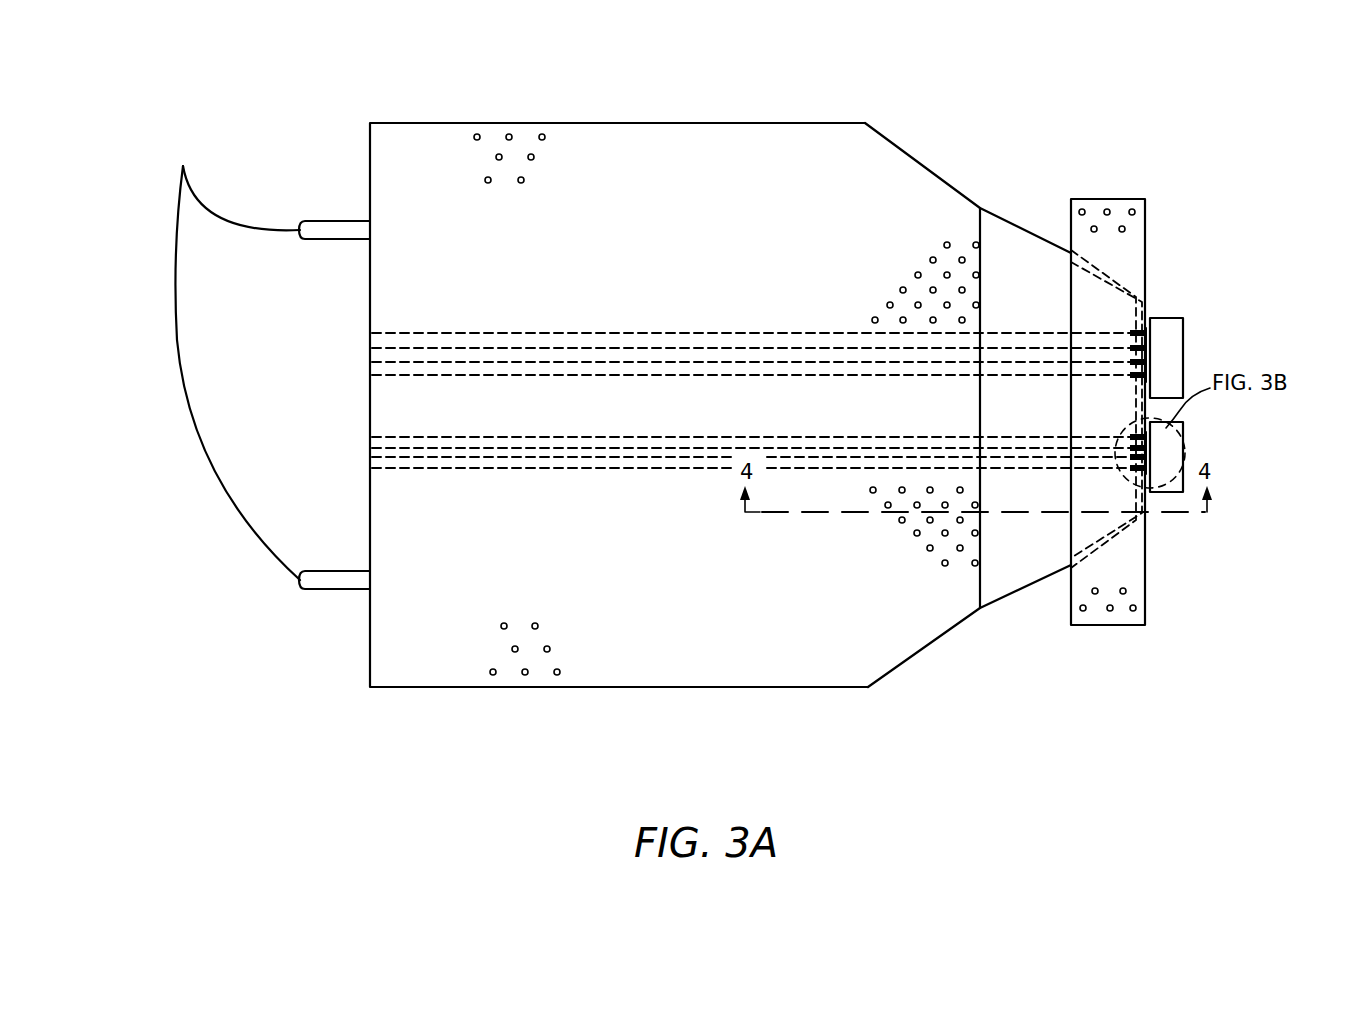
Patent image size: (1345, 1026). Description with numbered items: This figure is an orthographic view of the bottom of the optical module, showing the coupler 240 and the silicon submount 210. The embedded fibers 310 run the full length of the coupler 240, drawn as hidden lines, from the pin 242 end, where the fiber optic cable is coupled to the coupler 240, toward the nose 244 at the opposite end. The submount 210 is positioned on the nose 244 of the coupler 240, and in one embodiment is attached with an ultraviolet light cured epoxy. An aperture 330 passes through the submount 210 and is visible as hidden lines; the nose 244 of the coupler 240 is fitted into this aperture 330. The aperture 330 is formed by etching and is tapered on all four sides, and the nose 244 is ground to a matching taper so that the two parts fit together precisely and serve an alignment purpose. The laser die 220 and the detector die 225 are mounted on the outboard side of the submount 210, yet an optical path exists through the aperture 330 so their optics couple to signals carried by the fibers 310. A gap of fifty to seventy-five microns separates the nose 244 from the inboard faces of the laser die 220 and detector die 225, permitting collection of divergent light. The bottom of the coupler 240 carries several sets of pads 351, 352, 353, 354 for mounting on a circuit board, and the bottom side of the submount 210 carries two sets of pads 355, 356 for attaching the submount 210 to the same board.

The coupler 240 is at (650, 123).
The nose 244 is at (1003, 217).
The pin 242 is at (267, 351).
The embedded fibers 310 is at (405, 318).
The pads 351 is at (452, 138).
The pads 352 is at (470, 673).
The pads 353 is at (921, 236).
The pads 354 is at (909, 562).
The pads 355 is at (1156, 212).
The pads 356 is at (1063, 608).
The submount 210 is at (1117, 199).
The aperture 330 is at (1118, 282).
The laser die 220 is at (1186, 337).
The detector die 225 is at (1183, 440).